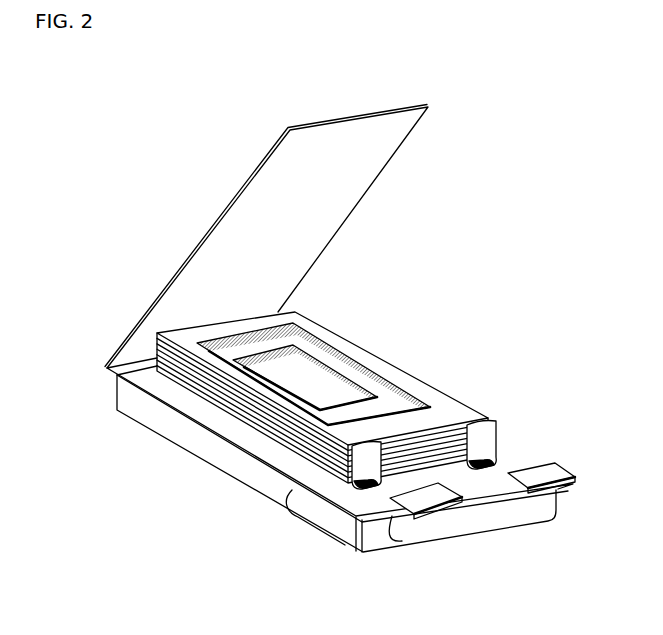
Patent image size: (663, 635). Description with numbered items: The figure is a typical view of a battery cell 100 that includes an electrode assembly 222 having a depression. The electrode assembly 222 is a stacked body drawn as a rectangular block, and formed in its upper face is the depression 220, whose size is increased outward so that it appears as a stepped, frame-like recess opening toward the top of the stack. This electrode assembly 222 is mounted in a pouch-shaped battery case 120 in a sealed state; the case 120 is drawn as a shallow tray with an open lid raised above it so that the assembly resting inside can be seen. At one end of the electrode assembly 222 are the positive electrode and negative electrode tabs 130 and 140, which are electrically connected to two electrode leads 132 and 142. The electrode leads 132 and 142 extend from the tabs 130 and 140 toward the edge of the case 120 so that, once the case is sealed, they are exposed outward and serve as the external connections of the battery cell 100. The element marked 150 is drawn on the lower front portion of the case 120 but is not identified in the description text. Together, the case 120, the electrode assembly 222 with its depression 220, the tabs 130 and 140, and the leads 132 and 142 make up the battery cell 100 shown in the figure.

The battery cell 100 is at (119, 178).
The pouch-shaped battery case 120 is at (104, 365).
The positive electrode tab 130 is at (325, 483).
The electrode lead 132 is at (345, 541).
The negative electrode tab 140 is at (497, 440).
The electrode lead 142 is at (513, 455).
The protective member 150 is at (405, 545).
The depression 220 is at (343, 393).
The electrode assembly 222 is at (358, 345).